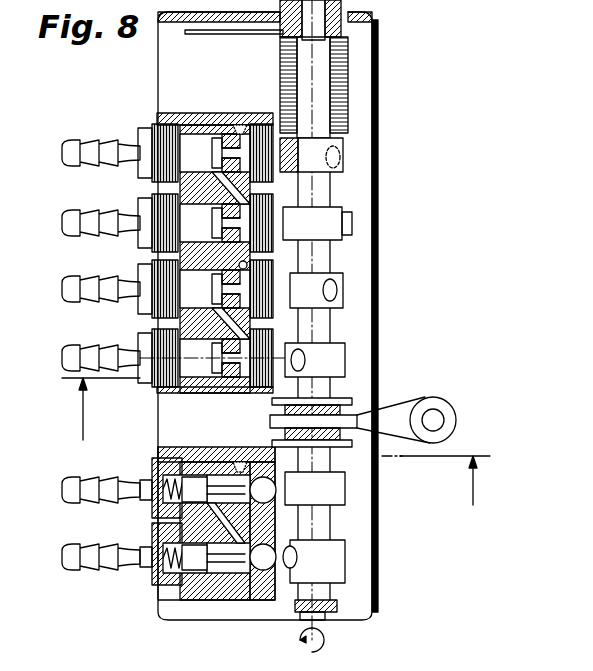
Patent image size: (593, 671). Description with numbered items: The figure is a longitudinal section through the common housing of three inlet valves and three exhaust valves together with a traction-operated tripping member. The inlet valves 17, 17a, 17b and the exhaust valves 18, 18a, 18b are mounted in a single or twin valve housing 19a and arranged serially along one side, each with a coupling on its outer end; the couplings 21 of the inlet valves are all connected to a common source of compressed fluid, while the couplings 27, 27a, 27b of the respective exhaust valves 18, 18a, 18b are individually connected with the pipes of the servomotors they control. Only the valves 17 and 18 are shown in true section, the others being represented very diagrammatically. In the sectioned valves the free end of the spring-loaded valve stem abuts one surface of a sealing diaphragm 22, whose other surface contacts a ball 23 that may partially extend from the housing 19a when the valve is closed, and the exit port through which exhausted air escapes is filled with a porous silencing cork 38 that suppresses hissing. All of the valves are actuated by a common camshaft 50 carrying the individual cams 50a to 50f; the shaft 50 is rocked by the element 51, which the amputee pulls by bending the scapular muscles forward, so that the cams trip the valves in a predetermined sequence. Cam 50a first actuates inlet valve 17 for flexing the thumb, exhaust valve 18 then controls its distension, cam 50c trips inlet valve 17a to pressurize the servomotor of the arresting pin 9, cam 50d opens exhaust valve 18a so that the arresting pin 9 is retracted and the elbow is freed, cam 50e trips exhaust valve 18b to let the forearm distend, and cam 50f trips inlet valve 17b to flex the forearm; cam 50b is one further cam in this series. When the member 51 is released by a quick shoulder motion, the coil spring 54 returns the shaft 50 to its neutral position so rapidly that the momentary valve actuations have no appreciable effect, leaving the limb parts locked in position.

The arresting pin 9 is at (276, 452).
The inlet valve 17 is at (200, 572).
The inlet valve 17a is at (190, 362).
The inlet valve 17b is at (192, 228).
The exhaust valve 18 is at (160, 450).
The exhaust valve 18a is at (192, 290).
The exhaust valve 18b is at (200, 153).
The valve housing 19a is at (180, 118).
The coupling 21 is at (70, 222).
The sealing diaphragm 22 is at (233, 590).
The ball 23 is at (262, 572).
The coupling 27 is at (72, 486).
The coupling 27a is at (70, 290).
The coupling 27b is at (88, 148).
The cork 38 is at (241, 125).
The camshaft 50 is at (322, 325).
The cam 50a is at (292, 568).
The cam 50b is at (340, 496).
The cam 50c is at (303, 360).
The cam 50d is at (336, 290).
The cam 50e is at (340, 157).
The cam 50f is at (352, 220).
The tripping member 51 is at (452, 400).
The coil spring 54 is at (347, 70).